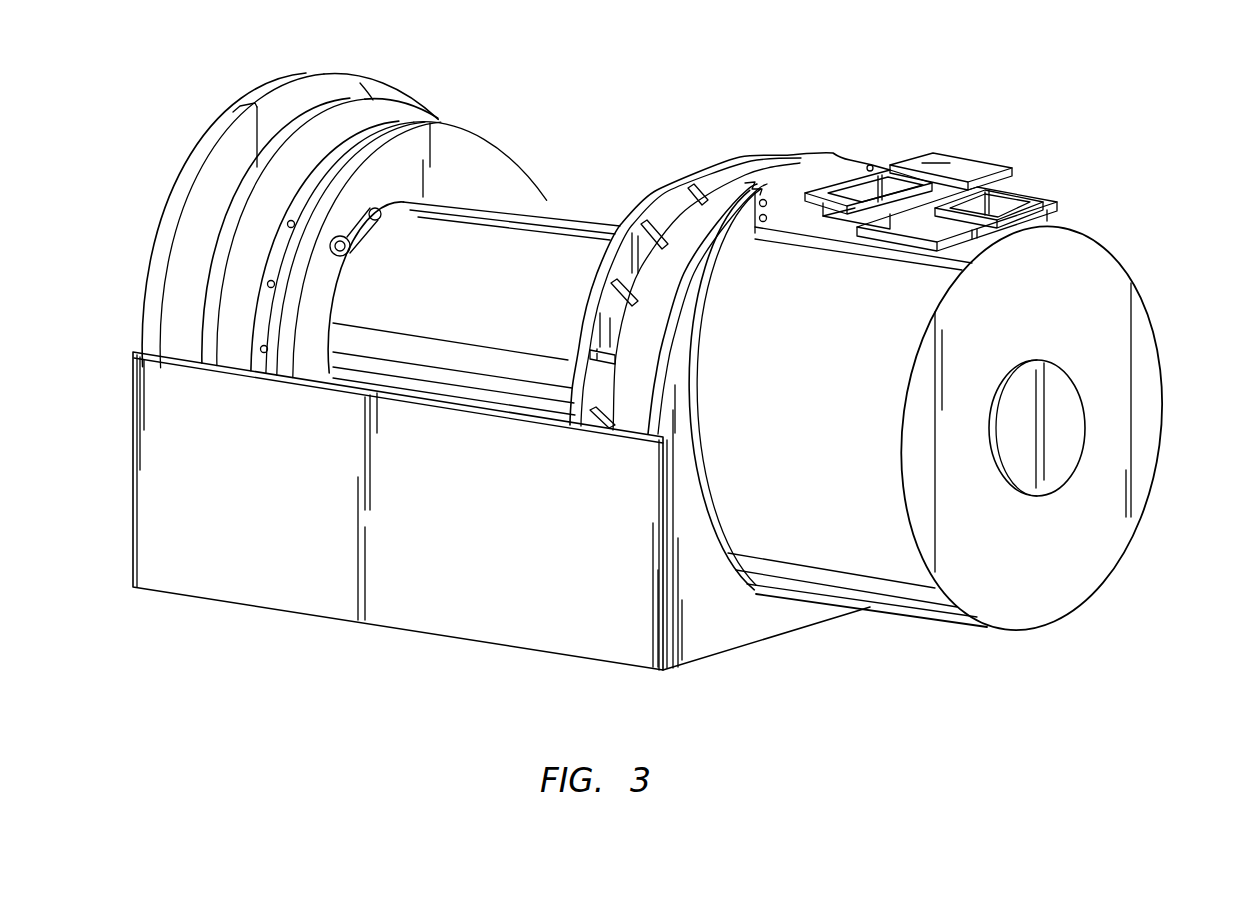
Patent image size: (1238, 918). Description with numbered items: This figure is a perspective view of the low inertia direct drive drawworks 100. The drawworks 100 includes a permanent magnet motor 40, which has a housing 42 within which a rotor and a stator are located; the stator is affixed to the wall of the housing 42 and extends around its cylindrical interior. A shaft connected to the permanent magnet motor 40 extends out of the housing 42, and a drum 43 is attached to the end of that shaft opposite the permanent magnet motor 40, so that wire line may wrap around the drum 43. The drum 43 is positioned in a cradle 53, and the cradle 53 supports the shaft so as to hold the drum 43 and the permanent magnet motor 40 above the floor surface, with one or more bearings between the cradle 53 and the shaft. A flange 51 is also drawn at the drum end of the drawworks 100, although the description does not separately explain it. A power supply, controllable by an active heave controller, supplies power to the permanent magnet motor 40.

The drawworks 100 is at (731, 90).
The permanent magnet motor 40 is at (1083, 253).
The housing 42 is at (913, 617).
The drum 43 is at (520, 206).
The flange 51 is at (377, 82).
The cradle 53 is at (248, 98).